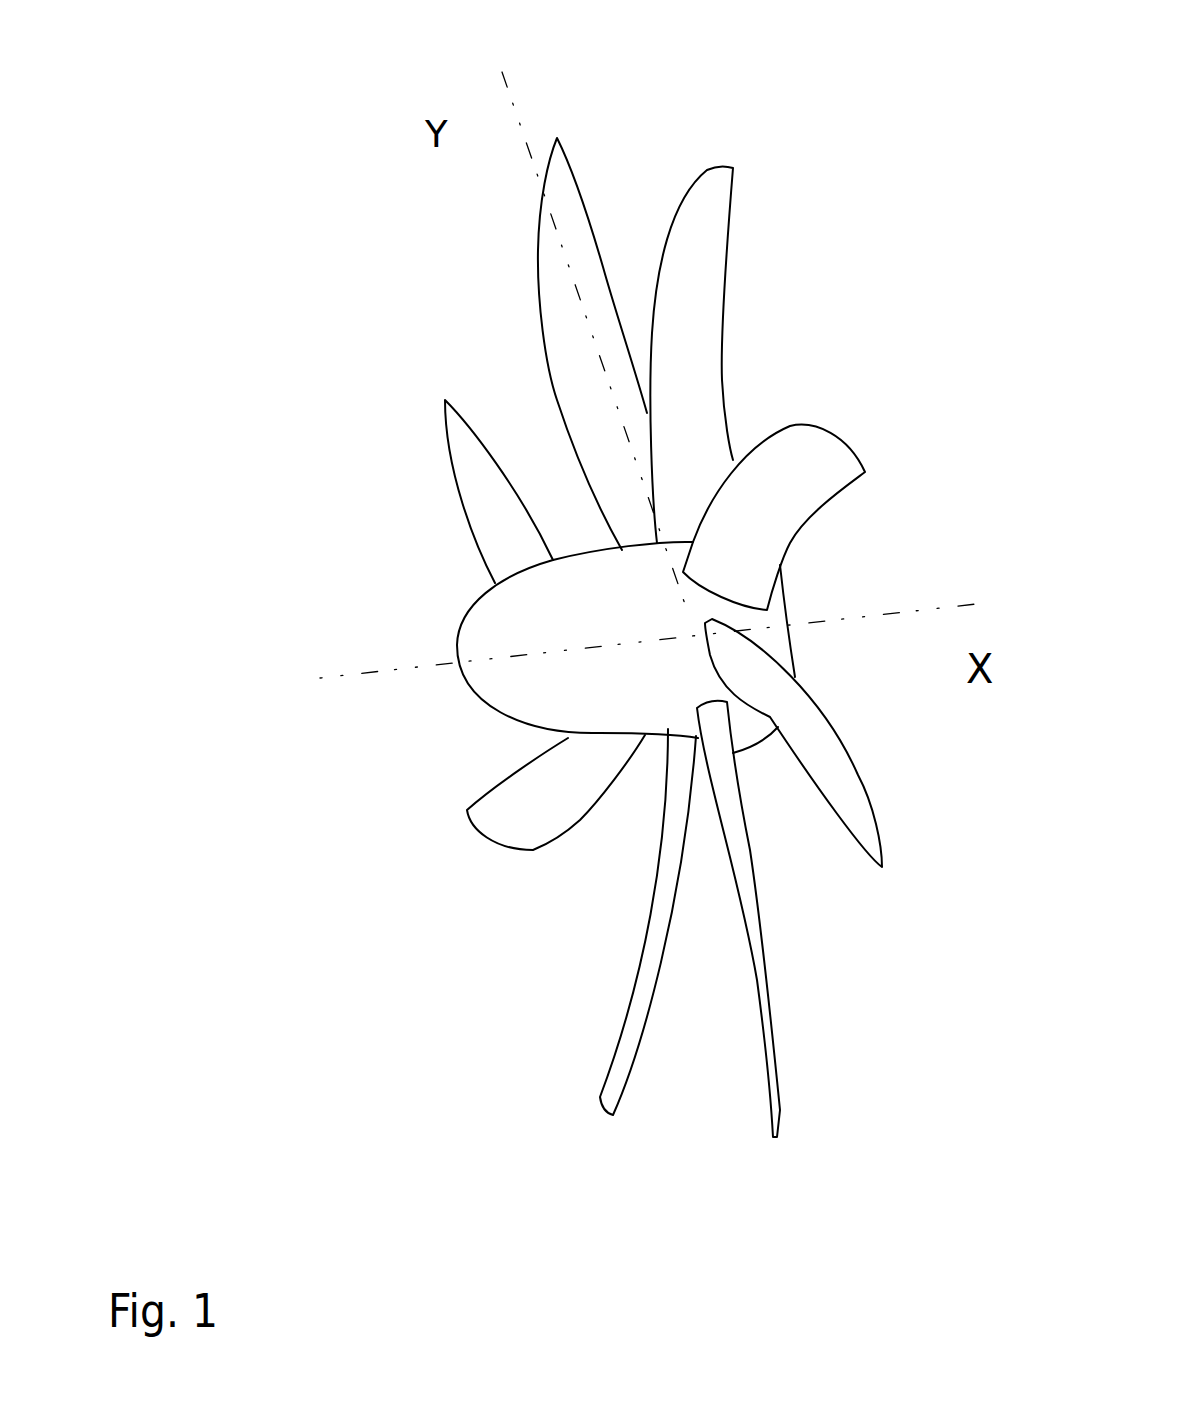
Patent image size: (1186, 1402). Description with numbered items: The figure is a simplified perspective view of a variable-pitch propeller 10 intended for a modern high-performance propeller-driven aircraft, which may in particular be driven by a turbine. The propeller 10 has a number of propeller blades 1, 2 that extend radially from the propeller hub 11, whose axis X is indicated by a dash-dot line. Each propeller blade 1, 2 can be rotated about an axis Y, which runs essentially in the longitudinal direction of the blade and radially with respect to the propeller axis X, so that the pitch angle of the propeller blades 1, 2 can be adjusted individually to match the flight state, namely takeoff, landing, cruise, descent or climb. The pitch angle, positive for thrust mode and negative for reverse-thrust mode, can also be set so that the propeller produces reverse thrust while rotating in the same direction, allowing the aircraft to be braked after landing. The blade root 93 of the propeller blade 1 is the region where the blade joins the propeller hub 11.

The propeller 10 is at (619, 600).
The propeller hub 11 is at (530, 688).
The propeller blade 1 is at (567, 202).
The propeller blade 2 is at (710, 250).
The blade root 93 is at (735, 590).